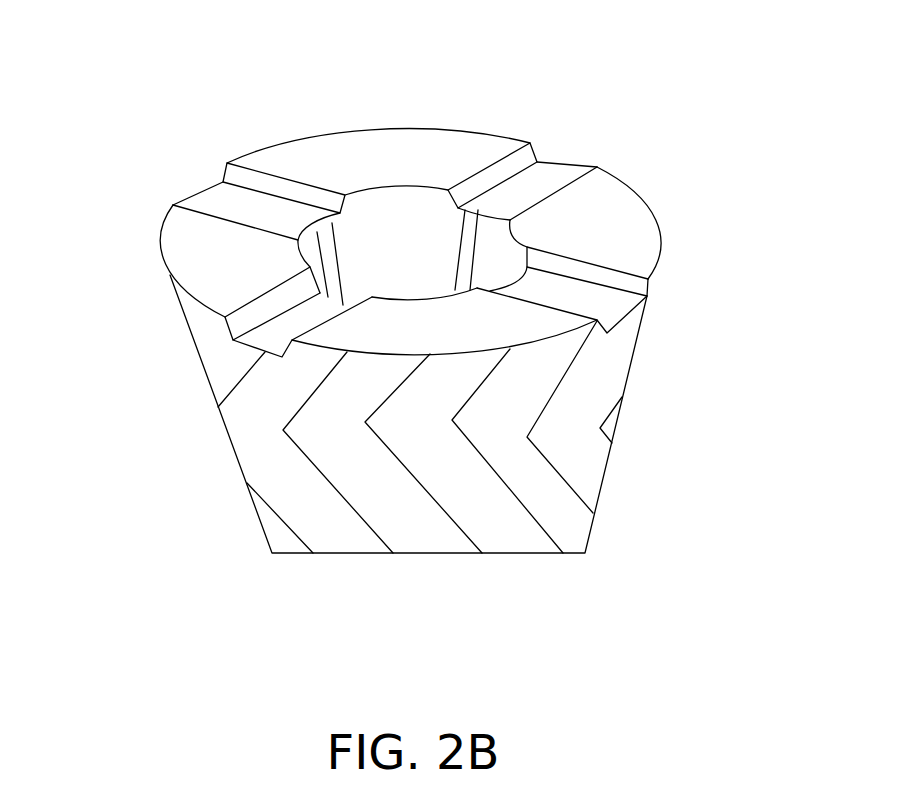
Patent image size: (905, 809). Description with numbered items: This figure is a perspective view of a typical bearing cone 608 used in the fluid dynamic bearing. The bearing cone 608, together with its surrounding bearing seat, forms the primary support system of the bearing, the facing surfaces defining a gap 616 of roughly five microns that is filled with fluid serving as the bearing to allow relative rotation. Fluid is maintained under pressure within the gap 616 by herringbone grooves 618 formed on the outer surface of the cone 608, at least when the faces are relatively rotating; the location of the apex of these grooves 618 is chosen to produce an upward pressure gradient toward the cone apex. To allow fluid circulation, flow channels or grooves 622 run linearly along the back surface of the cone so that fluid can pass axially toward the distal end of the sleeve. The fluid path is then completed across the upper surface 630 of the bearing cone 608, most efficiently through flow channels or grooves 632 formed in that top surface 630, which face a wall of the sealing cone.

The bearing cone 608 is at (662, 157).
The gap 616 is at (383, 445).
The grooves 618 is at (483, 383).
The grooves 622 is at (335, 253).
The upper surface 630 is at (552, 240).
The grooves 632 is at (523, 192).